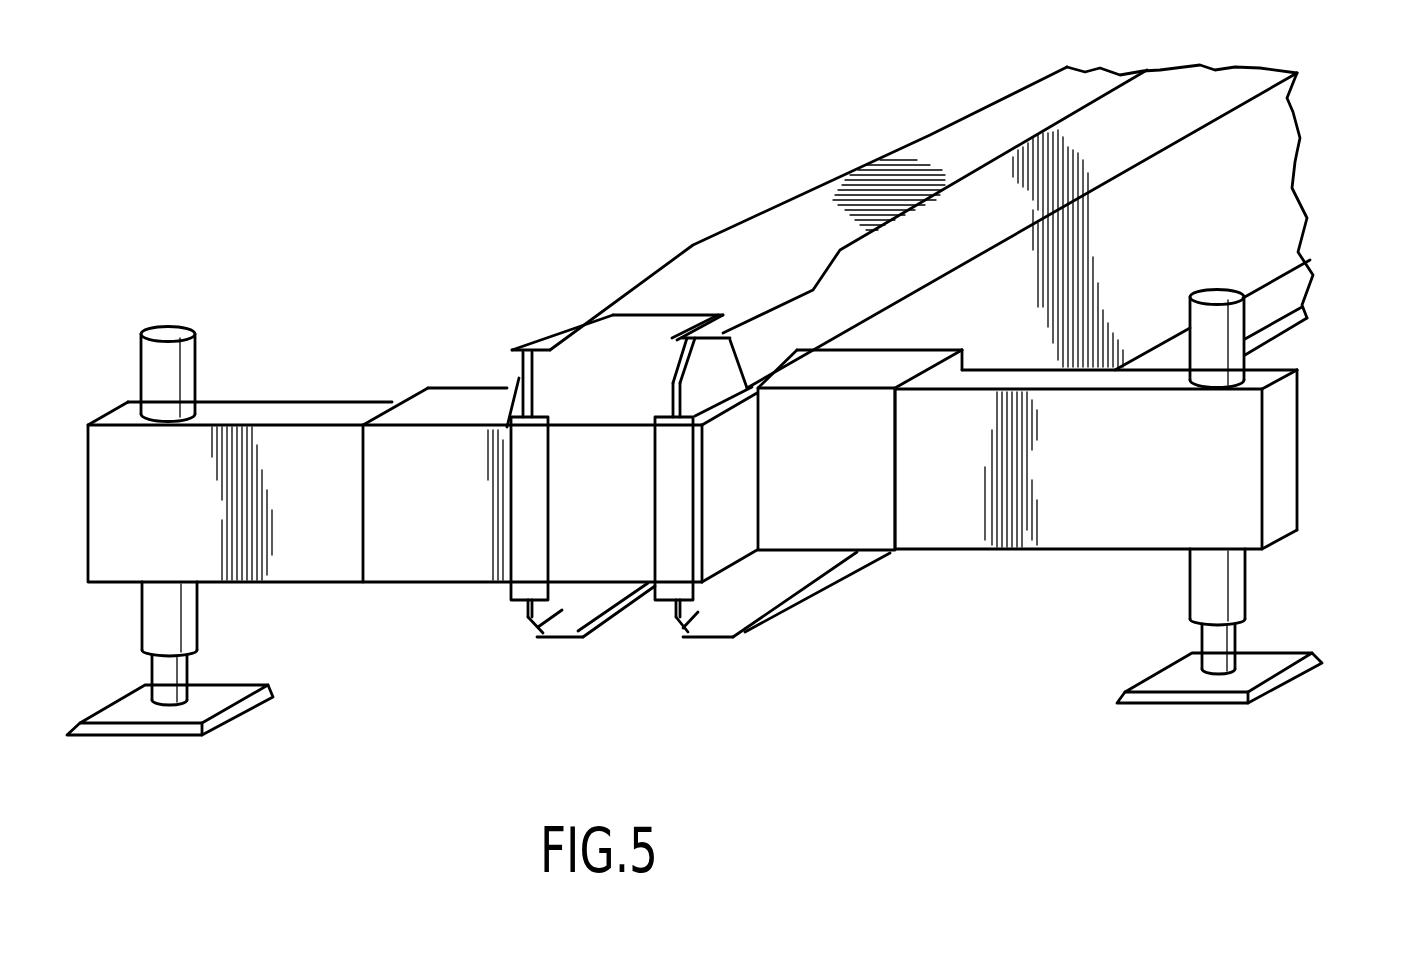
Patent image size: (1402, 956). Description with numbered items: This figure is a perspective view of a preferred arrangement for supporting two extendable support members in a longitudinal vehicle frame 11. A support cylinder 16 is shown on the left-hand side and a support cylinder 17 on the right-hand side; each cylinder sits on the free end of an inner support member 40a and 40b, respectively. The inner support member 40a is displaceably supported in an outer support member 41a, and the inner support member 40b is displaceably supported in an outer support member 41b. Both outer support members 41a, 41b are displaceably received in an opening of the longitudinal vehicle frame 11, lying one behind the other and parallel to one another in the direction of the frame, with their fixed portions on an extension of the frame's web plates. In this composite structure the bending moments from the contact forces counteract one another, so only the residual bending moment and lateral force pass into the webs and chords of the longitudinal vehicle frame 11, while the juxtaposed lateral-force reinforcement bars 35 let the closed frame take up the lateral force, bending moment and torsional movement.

The longitudinal vehicle frame 11 is at (1250, 177).
The support cylinder 16 is at (182, 625).
The support cylinder 17 is at (1232, 602).
The lateral-force reinforcement bar 35 is at (542, 377).
The inner support member 40a is at (190, 503).
The inner support member 40b is at (1130, 487).
The outer support member 41a is at (452, 540).
The outer support member 41b is at (848, 477).